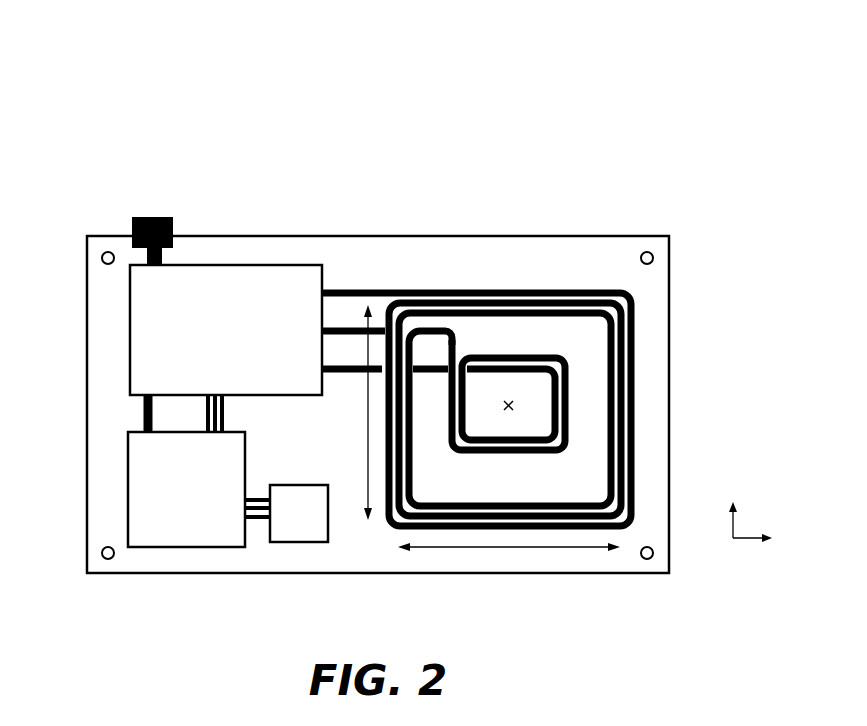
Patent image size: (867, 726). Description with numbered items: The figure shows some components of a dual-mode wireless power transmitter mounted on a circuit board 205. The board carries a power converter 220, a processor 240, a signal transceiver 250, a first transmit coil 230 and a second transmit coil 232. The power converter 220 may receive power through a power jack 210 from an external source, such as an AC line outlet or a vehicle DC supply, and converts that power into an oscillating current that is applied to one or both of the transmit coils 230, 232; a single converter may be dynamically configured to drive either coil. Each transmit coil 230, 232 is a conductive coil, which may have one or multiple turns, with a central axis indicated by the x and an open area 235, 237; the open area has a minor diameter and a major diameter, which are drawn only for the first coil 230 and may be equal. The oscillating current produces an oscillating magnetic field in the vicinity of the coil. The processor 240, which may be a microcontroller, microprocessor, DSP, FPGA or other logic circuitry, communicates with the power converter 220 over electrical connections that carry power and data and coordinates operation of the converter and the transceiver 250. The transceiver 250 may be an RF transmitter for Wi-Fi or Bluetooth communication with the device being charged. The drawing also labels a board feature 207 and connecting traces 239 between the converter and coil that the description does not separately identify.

The circuit board 205 is at (217, 147).
The substrate / circuit board 207 is at (436, 236).
The power jack 210 is at (150, 217).
The power converter 220 is at (226, 330).
The first transmit coil 230 is at (636, 438).
The second transmit coil 232 is at (569, 384).
The open area 235 is at (482, 342).
The open area 237 is at (512, 428).
The coil feed traces 239 is at (350, 326).
The processor 240 is at (186, 471).
The signal transceiver 250 is at (286, 513).